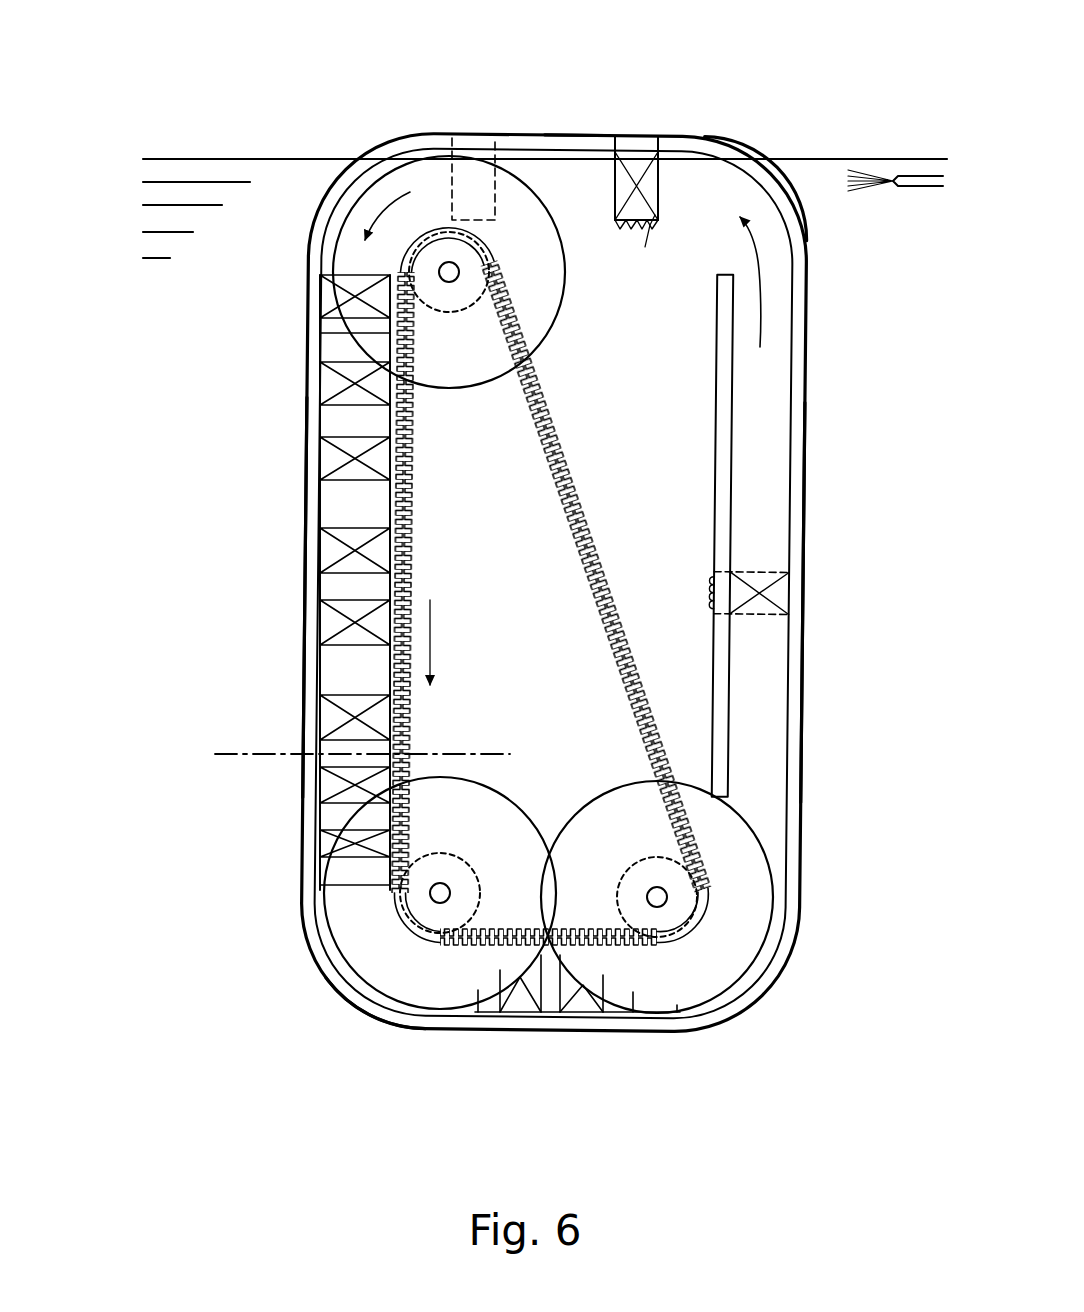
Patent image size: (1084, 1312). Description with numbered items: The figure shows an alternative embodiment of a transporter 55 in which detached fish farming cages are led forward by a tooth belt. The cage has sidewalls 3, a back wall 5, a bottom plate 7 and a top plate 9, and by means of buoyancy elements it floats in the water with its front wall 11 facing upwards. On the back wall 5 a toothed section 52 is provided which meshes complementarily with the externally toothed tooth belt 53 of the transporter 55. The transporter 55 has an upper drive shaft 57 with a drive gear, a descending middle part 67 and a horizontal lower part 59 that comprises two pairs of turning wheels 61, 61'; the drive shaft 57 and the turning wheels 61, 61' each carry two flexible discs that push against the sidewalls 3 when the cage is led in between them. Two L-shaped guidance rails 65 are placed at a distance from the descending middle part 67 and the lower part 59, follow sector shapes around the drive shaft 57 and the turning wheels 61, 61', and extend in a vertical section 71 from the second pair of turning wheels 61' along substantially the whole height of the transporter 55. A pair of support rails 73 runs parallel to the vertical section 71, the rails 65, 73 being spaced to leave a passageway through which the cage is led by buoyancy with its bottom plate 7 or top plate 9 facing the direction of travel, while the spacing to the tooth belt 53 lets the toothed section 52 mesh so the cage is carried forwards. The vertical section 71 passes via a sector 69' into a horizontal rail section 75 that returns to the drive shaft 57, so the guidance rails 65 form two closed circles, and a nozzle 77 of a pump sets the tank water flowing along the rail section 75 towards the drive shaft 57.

The transporter 55 is at (290, 98).
The upper drive shaft 57 is at (445, 270).
The horizontal rail section 75 is at (530, 146).
The sidewalls 3 is at (612, 182).
The front wall 11 is at (652, 140).
The bottom plate 7 is at (228, 750).
The top plate 9 is at (736, 269).
The sector 69' is at (821, 177).
The nozzle 77 is at (900, 188).
The back wall 5 is at (640, 207).
The toothed section 52 is at (637, 223).
The tooth belt 53 is at (393, 510).
The descending middle part 67 is at (452, 560).
The guidance rails 65 is at (310, 667).
The vertical section 71 is at (800, 678).
The support rails 73 is at (720, 718).
The turning wheels 61 is at (358, 967).
The turning wheels 61' is at (742, 959).
The lower part 59 is at (228, 915).